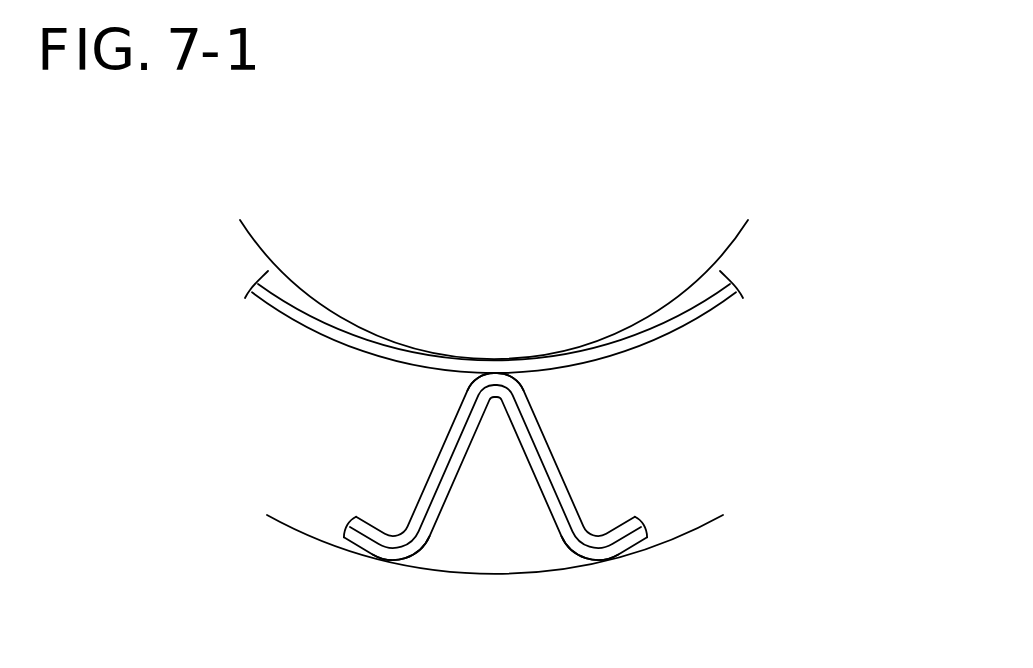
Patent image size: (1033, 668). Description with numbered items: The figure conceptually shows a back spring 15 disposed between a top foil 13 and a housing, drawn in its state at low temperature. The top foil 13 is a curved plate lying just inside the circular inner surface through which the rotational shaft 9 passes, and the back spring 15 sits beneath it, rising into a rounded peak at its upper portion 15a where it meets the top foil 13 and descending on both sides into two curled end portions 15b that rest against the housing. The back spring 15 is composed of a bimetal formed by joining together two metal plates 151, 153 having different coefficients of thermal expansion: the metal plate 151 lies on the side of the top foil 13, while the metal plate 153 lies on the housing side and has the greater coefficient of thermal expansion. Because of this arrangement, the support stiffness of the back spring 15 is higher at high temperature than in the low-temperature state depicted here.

The rotational shaft 9 is at (668, 265).
The top foil 13 is at (663, 338).
The back spring 15 is at (508, 474).
The metal plate 151 is at (546, 421).
The metal plate 153 is at (546, 468).
The top portion 15a is at (495, 372).
The end portions 15b is at (381, 562).